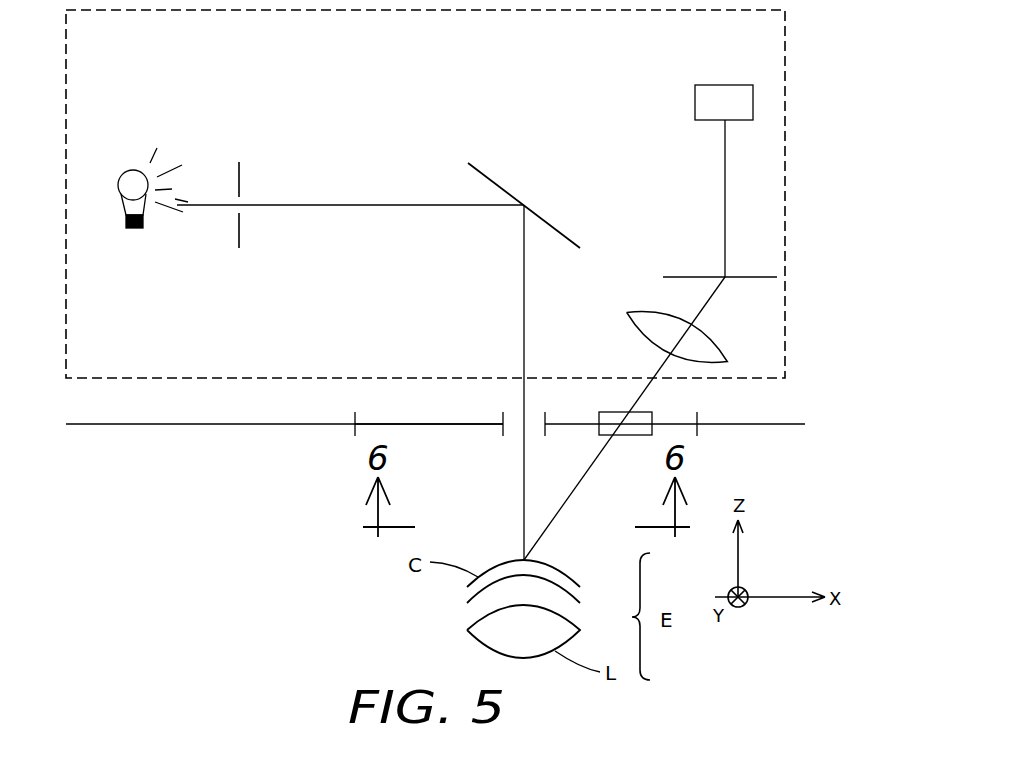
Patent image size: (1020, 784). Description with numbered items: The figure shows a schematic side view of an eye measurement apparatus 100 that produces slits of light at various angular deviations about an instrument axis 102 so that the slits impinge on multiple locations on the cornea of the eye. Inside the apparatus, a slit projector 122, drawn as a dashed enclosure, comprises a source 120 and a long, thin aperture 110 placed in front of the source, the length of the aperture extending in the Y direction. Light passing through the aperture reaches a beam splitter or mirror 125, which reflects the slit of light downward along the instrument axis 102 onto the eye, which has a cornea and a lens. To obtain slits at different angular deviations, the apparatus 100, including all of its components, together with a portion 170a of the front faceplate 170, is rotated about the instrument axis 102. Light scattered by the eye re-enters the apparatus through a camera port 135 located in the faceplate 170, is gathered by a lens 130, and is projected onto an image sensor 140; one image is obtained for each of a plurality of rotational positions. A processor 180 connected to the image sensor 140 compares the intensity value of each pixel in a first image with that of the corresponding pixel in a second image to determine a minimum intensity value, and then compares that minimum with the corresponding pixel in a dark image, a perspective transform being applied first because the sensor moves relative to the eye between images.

The measurement apparatus 100 is at (166, 518).
The instrument axis 102 is at (523, 297).
The aperture 110 is at (244, 203).
The source 120 is at (134, 170).
The slit projector 122 is at (320, 116).
The beam splitter or mirror 125 is at (557, 228).
The lens 130 is at (632, 333).
The camera port 135 is at (652, 415).
The image sensor 140 is at (670, 277).
The front faceplate 170 is at (247, 425).
The portion of the front faceplate 170a is at (413, 432).
The processor 180 is at (717, 85).